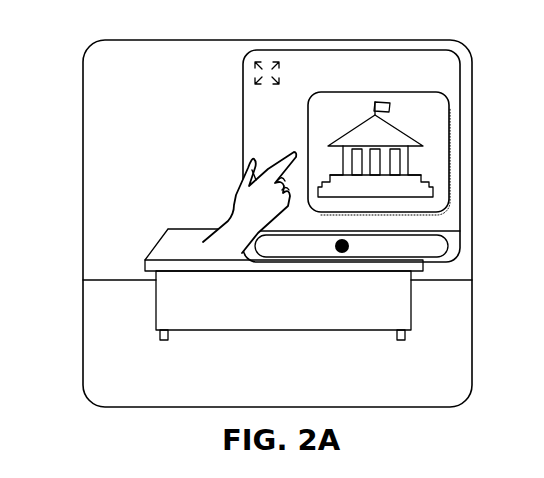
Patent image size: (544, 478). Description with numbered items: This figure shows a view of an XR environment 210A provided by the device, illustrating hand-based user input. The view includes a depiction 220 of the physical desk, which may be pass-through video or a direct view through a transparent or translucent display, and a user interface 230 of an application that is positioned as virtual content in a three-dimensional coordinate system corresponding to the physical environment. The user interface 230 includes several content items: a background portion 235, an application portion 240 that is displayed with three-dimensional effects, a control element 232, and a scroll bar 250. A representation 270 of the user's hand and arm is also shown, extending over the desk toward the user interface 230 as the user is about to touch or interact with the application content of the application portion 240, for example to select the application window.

The XR environment 210A is at (148, 71).
The depiction of desk 220 is at (180, 330).
The user interface 230 is at (246, 52).
The control element 232 is at (283, 61).
The background portion 235 is at (390, 68).
The application portion 240 is at (306, 112).
The scroll bar 250 is at (449, 245).
The representation of a hand/arm of user 270 is at (238, 192).